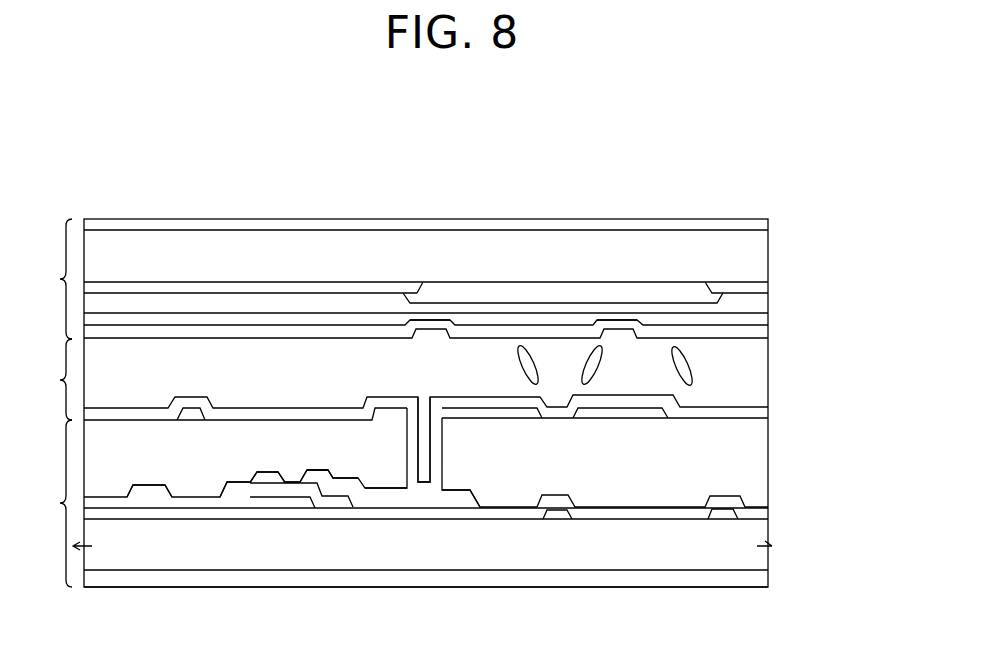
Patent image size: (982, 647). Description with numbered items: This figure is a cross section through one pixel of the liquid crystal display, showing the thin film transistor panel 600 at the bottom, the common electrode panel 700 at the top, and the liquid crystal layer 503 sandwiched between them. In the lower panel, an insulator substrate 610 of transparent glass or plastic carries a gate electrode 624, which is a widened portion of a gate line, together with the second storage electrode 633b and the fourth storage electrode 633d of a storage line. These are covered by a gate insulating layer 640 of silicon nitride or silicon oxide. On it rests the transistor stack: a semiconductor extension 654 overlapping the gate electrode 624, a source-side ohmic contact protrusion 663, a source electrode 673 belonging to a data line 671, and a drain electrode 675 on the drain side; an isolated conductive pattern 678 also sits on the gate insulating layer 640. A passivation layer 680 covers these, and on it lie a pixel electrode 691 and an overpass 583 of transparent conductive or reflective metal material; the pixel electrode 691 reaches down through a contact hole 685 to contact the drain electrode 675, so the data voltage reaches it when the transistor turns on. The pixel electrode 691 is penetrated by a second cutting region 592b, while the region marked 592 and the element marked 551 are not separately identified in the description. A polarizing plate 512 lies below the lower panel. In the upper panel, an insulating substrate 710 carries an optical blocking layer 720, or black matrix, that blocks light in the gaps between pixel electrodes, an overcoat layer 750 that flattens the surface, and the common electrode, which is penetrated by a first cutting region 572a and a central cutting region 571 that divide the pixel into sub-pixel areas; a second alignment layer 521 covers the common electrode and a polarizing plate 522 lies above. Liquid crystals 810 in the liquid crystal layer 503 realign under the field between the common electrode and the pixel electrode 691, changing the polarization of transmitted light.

The polarizing plate 522 is at (768, 222).
The insulating substrate 710 is at (768, 253).
The optical blocking layer 720 is at (768, 290).
The overcoat layer 750 is at (768, 313).
The second alignment layer 521 is at (768, 332).
The first cutting region 572a is at (410, 317).
The central cutting region 571 is at (597, 318).
The common electrode panel 700 is at (44, 279).
The liquid crystal layer 503 is at (44, 379).
The thin film transistor panel 600 is at (44, 503).
The liquid crystals 810 is at (597, 372).
The pixel electrode 691 is at (768, 412).
The alignment layer 551 is at (120, 420).
The overpass 583 is at (193, 420).
The color filter 592 is at (528, 418).
The second cutting region 592b is at (661, 418).
The contact hole 685 is at (428, 395).
The passivation layer 680 is at (768, 470).
The isolated conductive pattern 678 is at (150, 498).
The data line 671 is at (228, 498).
The protrusion 663 is at (273, 484).
The source electrode 673 is at (262, 478).
The extension 654 is at (336, 480).
The drain electrode 675 is at (420, 490).
The gate insulating layer 640 is at (768, 508).
The gate electrode 624 is at (100, 521).
The fourth storage electrode 633d is at (553, 520).
The second storage electrode 633b is at (723, 520).
The insulator substrate 610 is at (768, 561).
The polarizing plate 512 is at (768, 580).